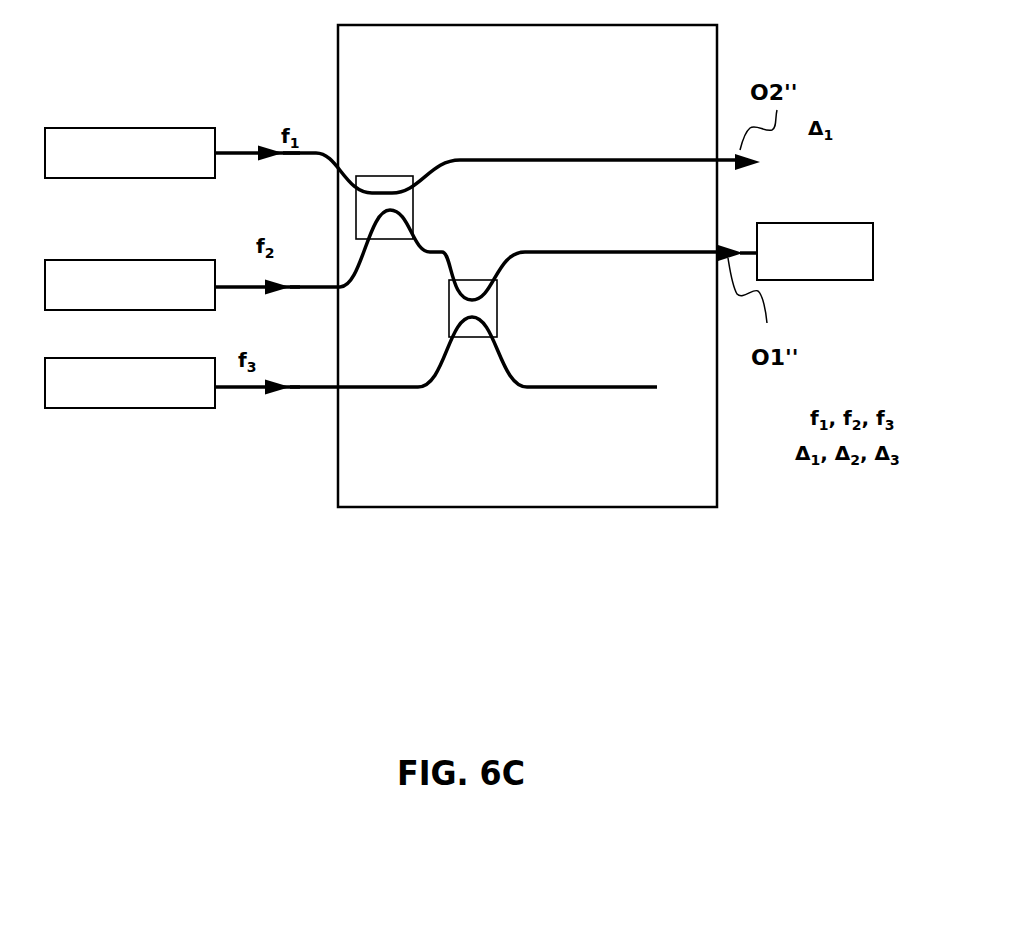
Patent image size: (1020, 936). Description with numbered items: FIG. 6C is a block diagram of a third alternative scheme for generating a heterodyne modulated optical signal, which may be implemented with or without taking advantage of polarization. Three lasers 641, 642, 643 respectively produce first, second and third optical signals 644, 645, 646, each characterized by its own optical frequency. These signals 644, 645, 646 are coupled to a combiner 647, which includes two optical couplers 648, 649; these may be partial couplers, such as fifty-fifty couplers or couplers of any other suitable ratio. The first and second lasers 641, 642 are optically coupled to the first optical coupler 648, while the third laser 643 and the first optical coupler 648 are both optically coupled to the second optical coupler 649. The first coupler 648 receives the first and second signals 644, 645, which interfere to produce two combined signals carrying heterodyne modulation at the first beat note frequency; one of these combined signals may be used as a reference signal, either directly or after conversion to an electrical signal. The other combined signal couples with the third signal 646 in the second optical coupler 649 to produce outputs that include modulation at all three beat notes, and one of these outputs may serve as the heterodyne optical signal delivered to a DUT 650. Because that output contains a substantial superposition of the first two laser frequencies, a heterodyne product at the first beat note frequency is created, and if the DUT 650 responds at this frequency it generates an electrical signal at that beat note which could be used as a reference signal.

The first laser 641 is at (187, 128).
The second laser 642 is at (146, 259).
The third laser 643 is at (160, 408).
The first optical signal 644 is at (270, 150).
The second optical signal 645 is at (275, 283).
The third optical signal 646 is at (275, 392).
The combiner 647 is at (338, 507).
The first optical coupler 648 is at (388, 176).
The second optical coupler 649 is at (483, 279).
The DUT 650 is at (810, 223).